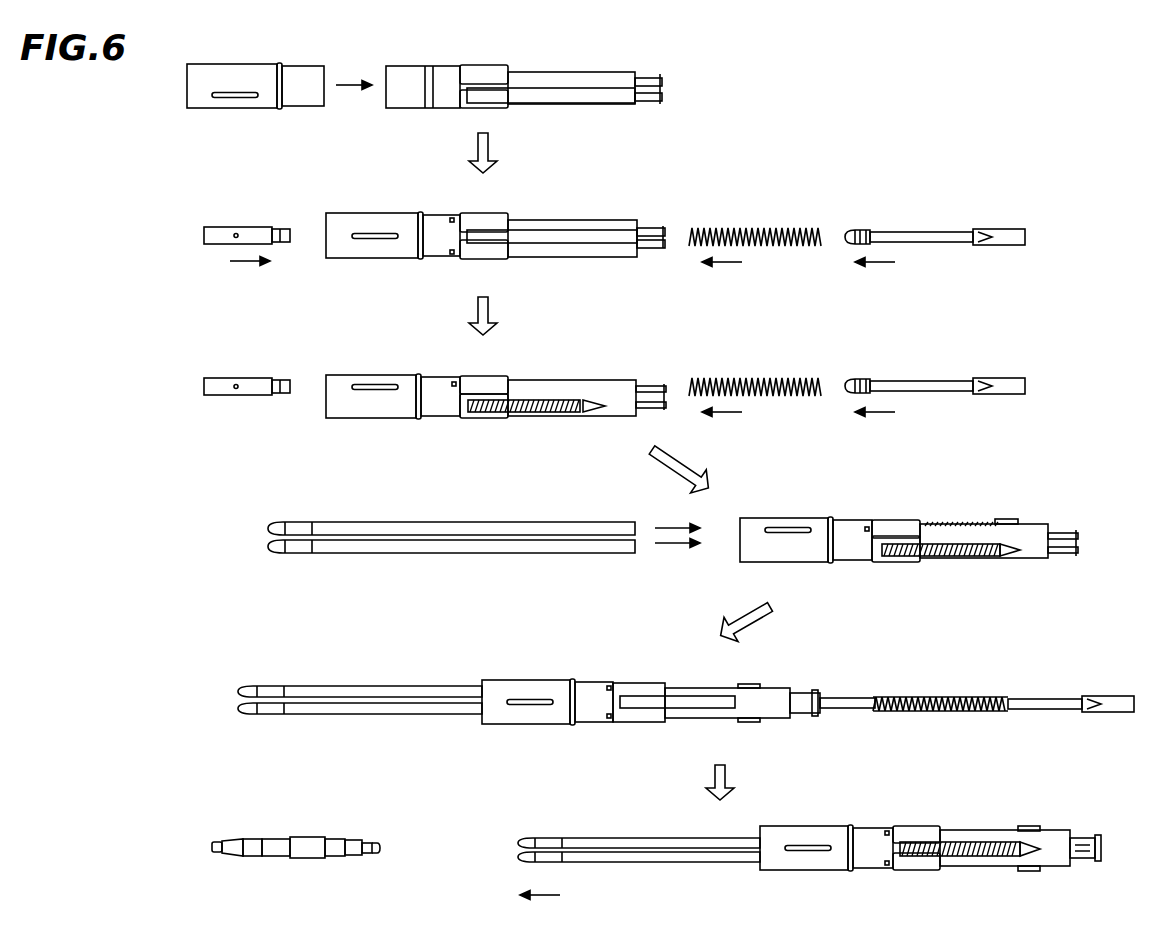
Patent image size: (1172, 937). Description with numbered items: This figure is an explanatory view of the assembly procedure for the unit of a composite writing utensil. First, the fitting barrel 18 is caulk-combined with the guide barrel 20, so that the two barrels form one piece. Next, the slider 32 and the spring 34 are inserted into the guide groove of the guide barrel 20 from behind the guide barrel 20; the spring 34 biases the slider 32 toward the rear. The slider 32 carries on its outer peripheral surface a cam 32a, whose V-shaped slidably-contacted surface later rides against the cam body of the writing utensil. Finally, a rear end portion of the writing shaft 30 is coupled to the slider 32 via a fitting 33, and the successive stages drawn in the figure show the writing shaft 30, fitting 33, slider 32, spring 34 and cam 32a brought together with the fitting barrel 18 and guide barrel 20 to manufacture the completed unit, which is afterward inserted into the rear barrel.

The fitting barrel 18 is at (300, 75).
The guide barrel 20 is at (545, 72).
The writing shaft 30 is at (563, 545).
The slider 32 is at (922, 233).
The cam 32a is at (997, 235).
The fitting 33 is at (249, 227).
The spring 34 is at (767, 231).